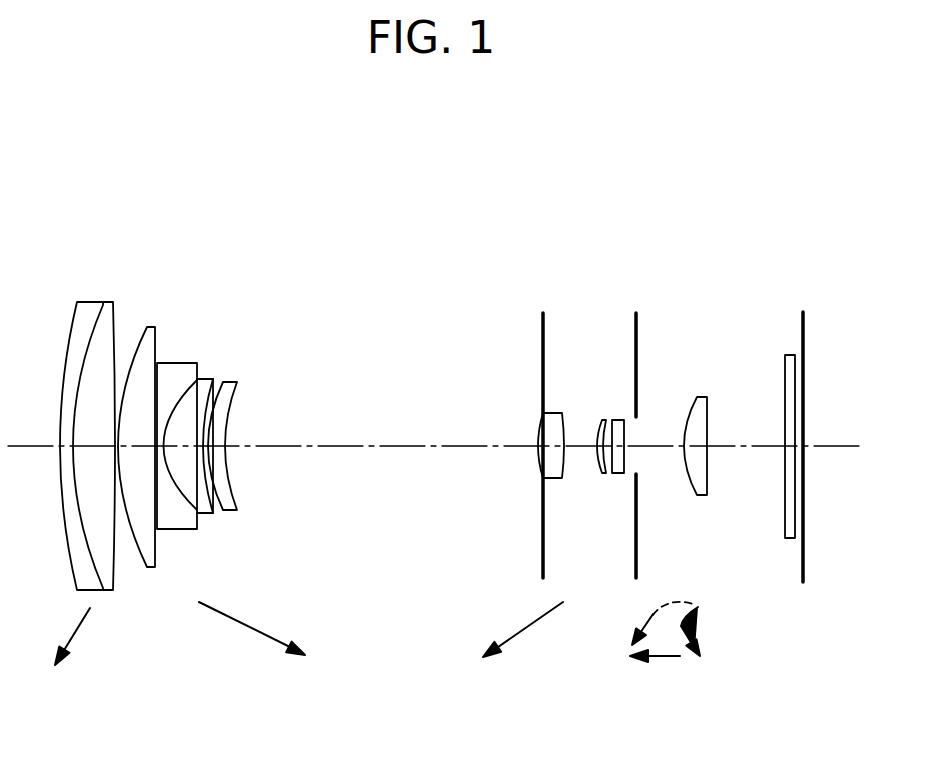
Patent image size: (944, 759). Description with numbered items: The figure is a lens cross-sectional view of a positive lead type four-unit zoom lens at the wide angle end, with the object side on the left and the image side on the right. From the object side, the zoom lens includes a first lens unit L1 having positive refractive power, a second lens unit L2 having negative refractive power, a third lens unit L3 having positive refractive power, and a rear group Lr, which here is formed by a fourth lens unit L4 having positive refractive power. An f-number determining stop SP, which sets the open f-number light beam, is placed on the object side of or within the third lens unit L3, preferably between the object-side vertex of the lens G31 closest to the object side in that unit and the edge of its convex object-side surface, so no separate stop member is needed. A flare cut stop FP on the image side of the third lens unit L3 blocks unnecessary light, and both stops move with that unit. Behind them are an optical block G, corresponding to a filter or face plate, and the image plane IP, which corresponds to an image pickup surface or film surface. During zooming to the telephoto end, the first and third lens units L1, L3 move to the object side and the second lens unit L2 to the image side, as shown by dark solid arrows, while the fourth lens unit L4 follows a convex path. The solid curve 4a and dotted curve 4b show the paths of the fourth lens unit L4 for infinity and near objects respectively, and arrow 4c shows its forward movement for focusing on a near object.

The first lens unit L1 is at (55, 240).
The second lens unit L2 is at (158, 240).
The third lens unit L3 is at (646, 239).
The fourth lens unit L4 is at (714, 239).
The rear group Lr is at (669, 177).
The f-number determining stop SP is at (543, 345).
The lens closest to the object side in the third lens unit G31 is at (540, 435).
The flare cut stop FP is at (637, 365).
The optical block G is at (789, 364).
The image plane IP is at (803, 400).
The solid curve 4a is at (690, 614).
The dotted curve 4b is at (653, 615).
The arrow 4c is at (670, 657).